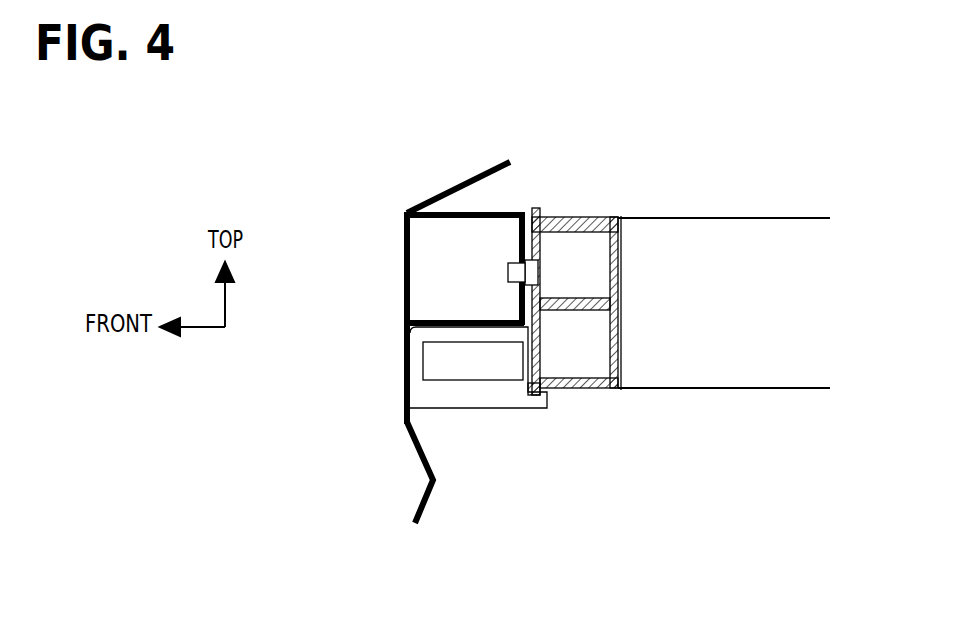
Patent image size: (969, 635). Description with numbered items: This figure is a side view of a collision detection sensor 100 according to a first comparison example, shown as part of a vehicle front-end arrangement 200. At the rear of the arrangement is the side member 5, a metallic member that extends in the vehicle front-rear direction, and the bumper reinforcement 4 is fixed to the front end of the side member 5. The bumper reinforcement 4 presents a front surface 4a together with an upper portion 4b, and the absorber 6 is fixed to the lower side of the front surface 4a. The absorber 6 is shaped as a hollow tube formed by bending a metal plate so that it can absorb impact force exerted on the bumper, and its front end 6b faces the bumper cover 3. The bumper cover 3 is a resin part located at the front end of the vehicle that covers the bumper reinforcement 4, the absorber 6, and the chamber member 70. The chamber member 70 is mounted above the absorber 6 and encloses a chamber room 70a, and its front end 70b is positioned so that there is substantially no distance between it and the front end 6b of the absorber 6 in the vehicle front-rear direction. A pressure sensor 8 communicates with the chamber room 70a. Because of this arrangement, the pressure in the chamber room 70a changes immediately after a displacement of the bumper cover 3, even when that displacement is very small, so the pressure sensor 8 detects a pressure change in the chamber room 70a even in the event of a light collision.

The collision detection sensor 100 is at (348, 134).
The sheet feeding device 200 is at (352, 201).
The chamber member 70 is at (414, 293).
The chamber room 70a is at (405, 277).
The front end 70b is at (440, 268).
The pressure sensor 8 is at (515, 263).
The bumper reinforcement 4 is at (586, 282).
The front surface 4a is at (524, 383).
The upper frame portion 4b is at (562, 217).
The side member 5 is at (798, 218).
The absorber 6 is at (451, 425).
The front end 6b is at (410, 420).
The bumper cover 3 is at (420, 498).